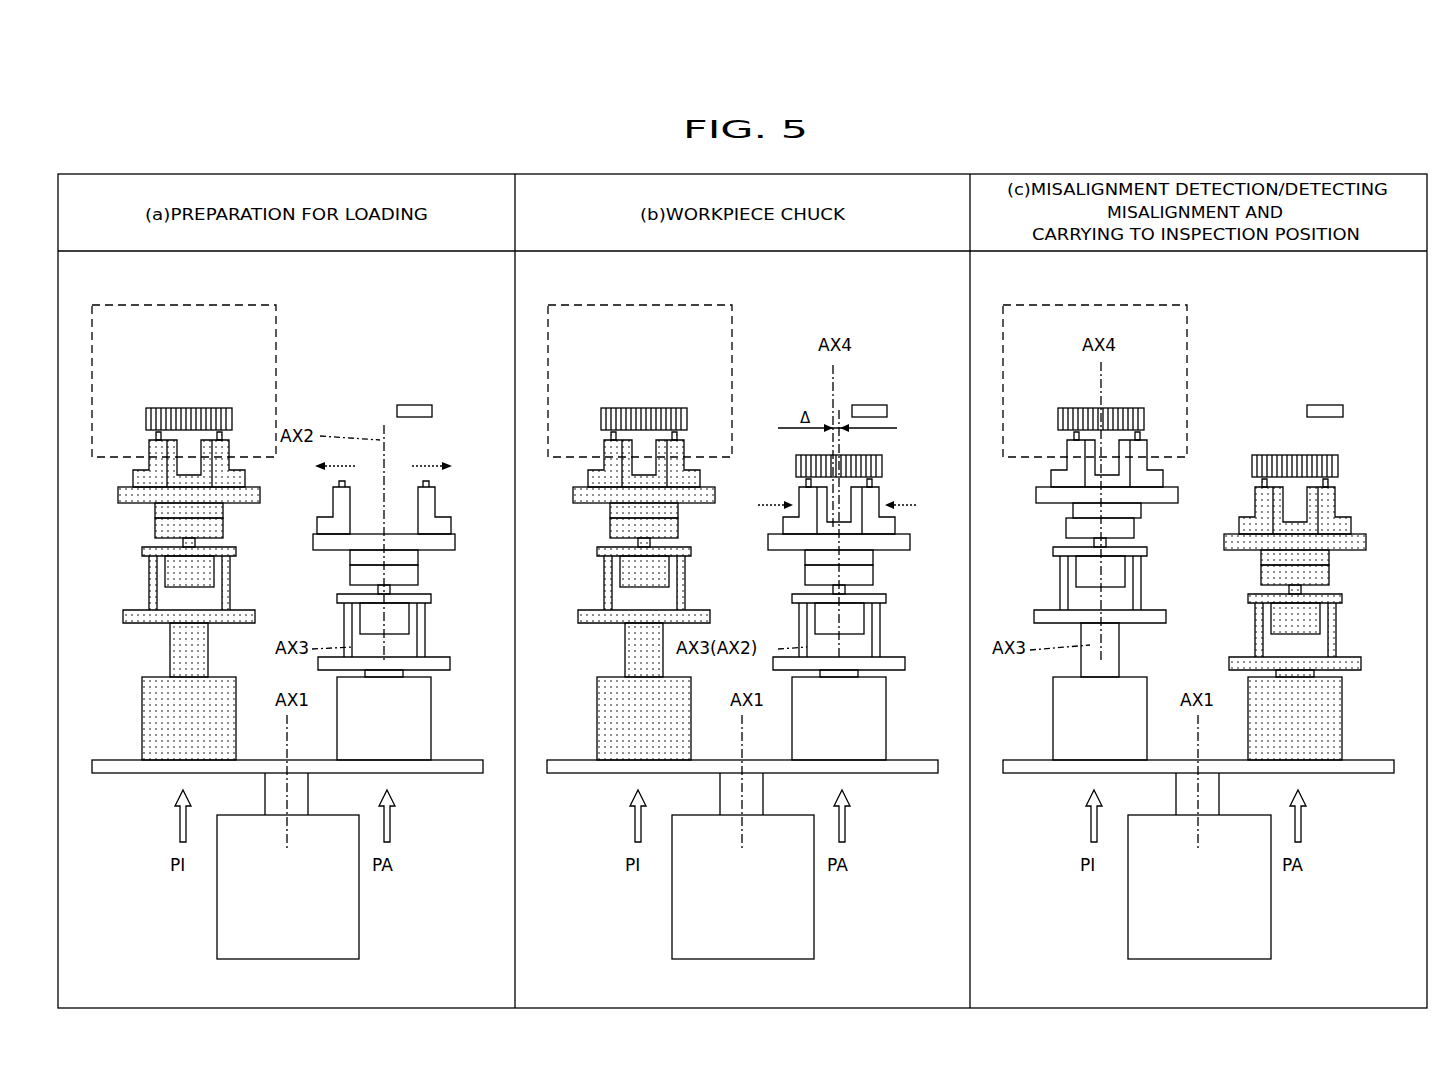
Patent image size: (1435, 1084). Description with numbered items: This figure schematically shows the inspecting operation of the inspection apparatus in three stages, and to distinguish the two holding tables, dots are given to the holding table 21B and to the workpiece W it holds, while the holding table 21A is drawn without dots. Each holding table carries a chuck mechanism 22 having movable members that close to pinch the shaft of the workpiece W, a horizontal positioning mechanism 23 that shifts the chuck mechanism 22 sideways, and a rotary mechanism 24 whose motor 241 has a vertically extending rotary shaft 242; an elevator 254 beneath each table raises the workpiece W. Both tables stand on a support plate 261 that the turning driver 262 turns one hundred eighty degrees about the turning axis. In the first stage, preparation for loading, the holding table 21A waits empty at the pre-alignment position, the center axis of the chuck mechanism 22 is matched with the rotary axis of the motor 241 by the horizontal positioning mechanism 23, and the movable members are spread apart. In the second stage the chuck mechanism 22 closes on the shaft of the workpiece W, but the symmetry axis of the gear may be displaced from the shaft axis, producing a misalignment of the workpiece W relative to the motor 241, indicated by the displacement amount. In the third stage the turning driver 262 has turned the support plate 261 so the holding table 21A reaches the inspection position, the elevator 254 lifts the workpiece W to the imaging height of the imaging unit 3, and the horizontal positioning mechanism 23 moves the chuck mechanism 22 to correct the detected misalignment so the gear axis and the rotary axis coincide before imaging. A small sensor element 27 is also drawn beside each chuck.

The imaging unit 3 is at (1195, 330).
The workpiece W is at (1130, 402).
The holding table 21A is at (1163, 438).
The holding table 21B is at (1357, 490).
The chuck mechanism 22 is at (1352, 506).
The horizontal positioning mechanism 23 is at (1338, 577).
The rotary mechanism 24 is at (741, 608).
The motor 241 is at (1310, 628).
The rotary shaft 242 is at (1103, 543).
The elevator 254 is at (1320, 716).
The support plate 261 is at (1377, 772).
The turning driver 262 is at (1259, 930).
The misalignment detector 27 is at (1331, 404).